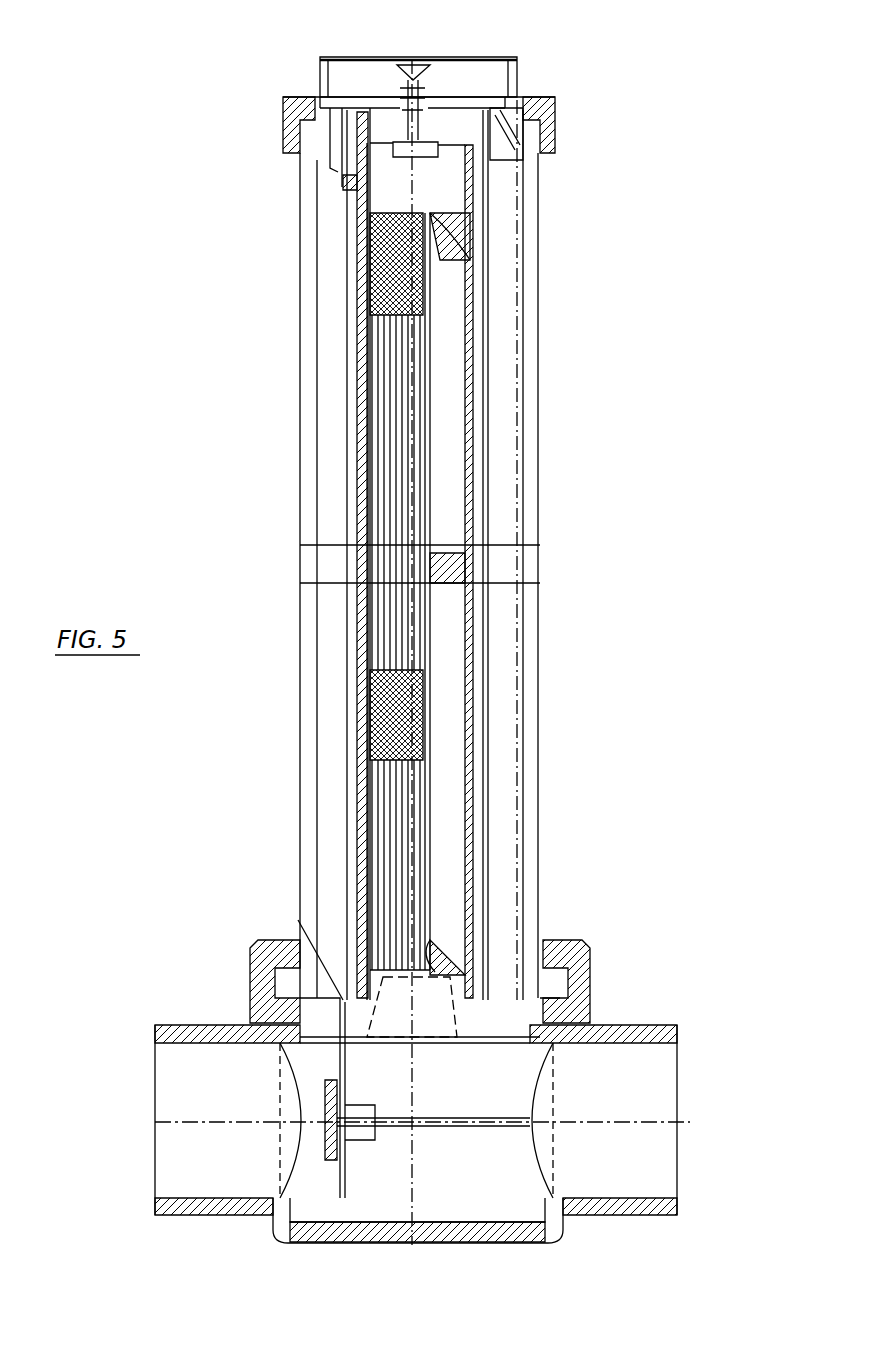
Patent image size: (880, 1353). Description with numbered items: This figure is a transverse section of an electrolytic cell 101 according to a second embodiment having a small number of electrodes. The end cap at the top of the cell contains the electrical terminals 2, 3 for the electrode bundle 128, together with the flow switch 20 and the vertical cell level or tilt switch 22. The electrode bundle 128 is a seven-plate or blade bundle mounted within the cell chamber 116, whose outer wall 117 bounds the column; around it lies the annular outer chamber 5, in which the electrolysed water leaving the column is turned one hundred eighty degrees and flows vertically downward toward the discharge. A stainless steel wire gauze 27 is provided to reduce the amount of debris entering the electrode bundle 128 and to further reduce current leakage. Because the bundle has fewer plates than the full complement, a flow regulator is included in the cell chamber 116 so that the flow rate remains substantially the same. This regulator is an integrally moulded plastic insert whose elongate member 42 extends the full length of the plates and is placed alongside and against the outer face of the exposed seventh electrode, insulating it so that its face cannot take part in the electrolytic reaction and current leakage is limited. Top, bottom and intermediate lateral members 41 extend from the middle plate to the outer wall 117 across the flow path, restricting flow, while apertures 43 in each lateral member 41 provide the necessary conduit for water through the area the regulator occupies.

The second embodiment cell 101 is at (130, 432).
The electrical terminal 2 is at (348, 165).
The electrical terminal 3 is at (445, 148).
The outer chamber 5 is at (500, 398).
The flow switch 20 is at (447, 152).
The vertical cell level or tilt switch 22 is at (422, 66).
The stainless steel wire gauze 27 is at (453, 978).
The lateral member 41 is at (445, 222).
The elongate member 42 is at (425, 815).
The apertures 43 is at (440, 256).
The cell chamber 116 is at (465, 645).
The outer wall 117 is at (345, 347).
The electrode bundle 128 is at (400, 495).